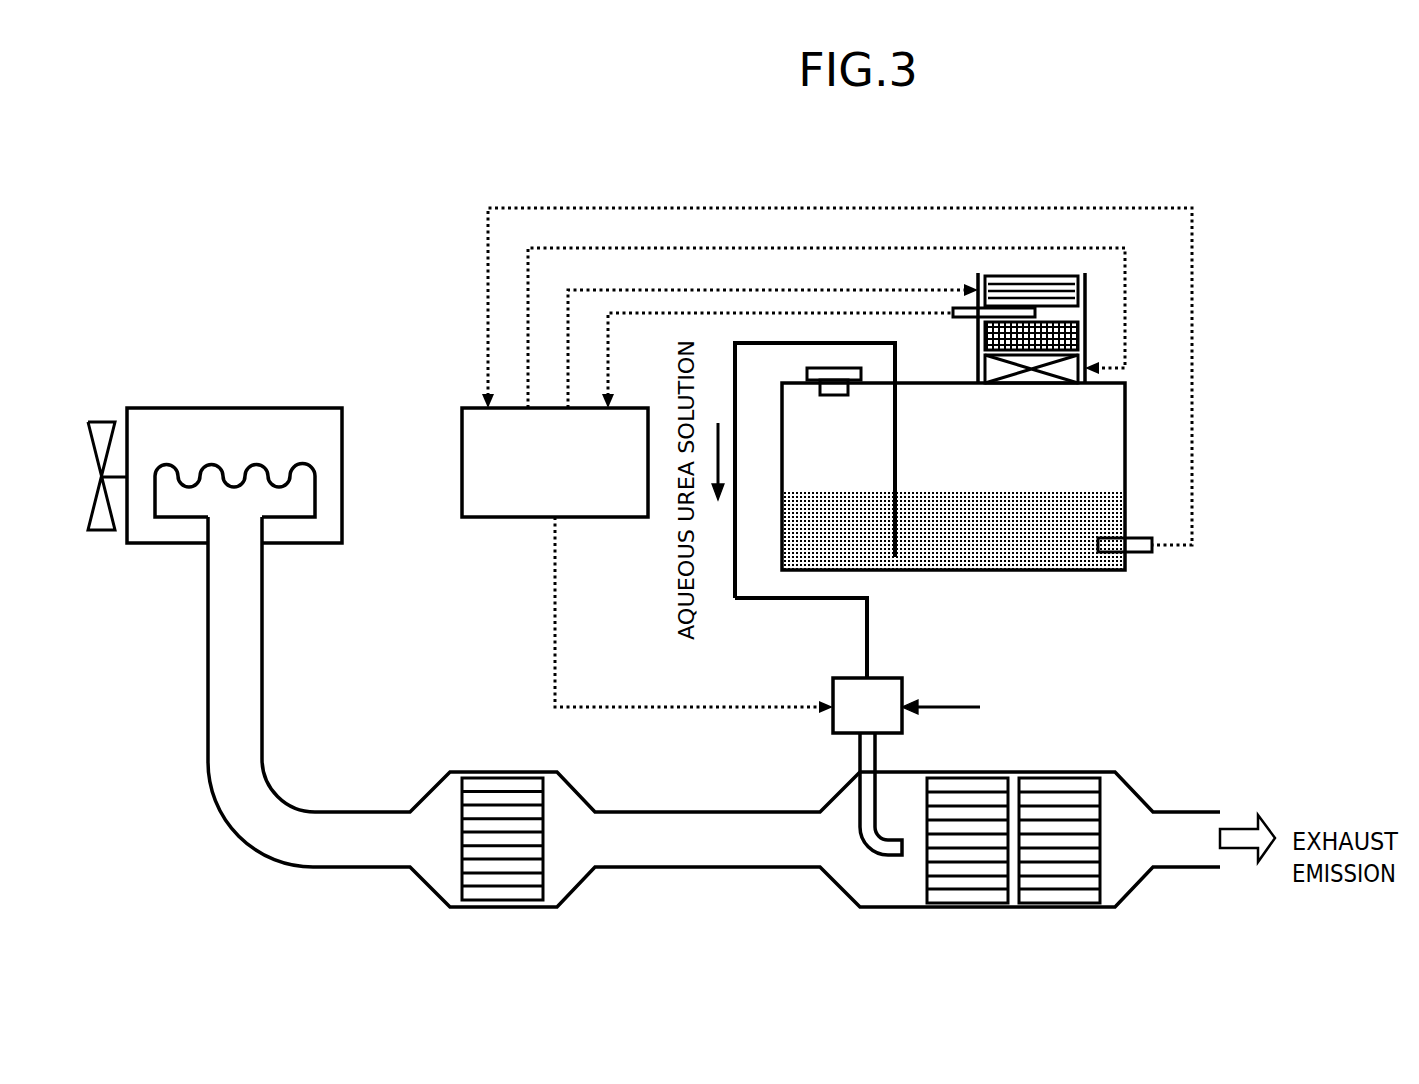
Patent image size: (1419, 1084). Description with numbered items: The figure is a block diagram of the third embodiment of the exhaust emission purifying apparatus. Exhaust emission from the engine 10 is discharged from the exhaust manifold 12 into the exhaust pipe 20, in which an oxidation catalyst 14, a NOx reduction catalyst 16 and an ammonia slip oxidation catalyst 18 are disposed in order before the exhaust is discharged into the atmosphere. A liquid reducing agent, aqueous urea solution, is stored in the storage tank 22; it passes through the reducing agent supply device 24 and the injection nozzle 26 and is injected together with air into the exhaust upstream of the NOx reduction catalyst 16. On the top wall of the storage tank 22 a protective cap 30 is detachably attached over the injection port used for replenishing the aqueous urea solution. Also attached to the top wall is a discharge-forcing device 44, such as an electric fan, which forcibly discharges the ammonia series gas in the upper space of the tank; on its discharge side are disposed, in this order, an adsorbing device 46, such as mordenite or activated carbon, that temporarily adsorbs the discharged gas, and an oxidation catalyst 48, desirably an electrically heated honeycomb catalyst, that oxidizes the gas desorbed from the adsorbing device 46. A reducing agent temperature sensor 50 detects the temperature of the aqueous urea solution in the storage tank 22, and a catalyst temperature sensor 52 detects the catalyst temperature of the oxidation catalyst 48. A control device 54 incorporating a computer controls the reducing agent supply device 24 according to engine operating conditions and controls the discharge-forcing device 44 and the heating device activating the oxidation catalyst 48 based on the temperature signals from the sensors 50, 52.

The engine 10 is at (248, 407).
The exhaust manifold 12 is at (193, 503).
The oxidation catalyst 14 is at (510, 893).
The NOx reduction catalyst 16 is at (953, 893).
The ammonia slip oxidation catalyst 18 is at (1045, 893).
The exhaust pipe 20 is at (360, 817).
The storage tank 22 is at (967, 572).
The reducing agent supply device 24 is at (833, 680).
The injection nozzle 26 is at (867, 847).
The protective cap 30 is at (837, 396).
The discharge-forcing device 44 is at (1042, 377).
The adsorbing device 46 is at (1078, 335).
The oxidation catalyst 48 is at (1078, 288).
The reducing agent temperature sensor 50 is at (1133, 553).
The catalyst temperature sensor 52 is at (968, 318).
The control device 54 is at (460, 483).